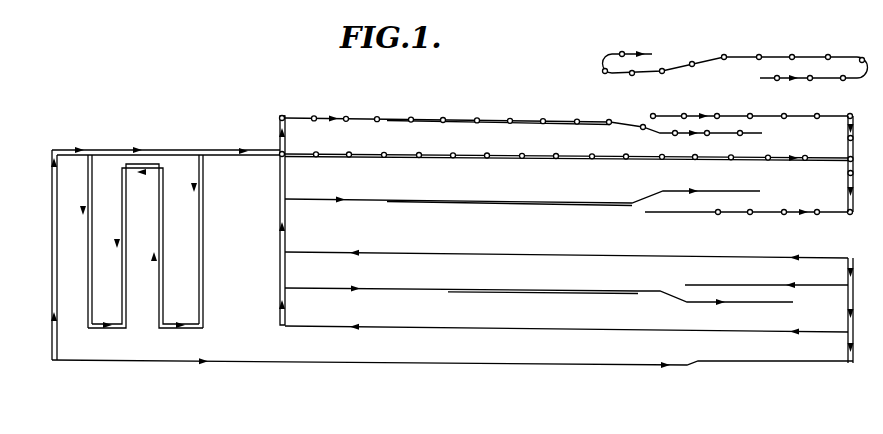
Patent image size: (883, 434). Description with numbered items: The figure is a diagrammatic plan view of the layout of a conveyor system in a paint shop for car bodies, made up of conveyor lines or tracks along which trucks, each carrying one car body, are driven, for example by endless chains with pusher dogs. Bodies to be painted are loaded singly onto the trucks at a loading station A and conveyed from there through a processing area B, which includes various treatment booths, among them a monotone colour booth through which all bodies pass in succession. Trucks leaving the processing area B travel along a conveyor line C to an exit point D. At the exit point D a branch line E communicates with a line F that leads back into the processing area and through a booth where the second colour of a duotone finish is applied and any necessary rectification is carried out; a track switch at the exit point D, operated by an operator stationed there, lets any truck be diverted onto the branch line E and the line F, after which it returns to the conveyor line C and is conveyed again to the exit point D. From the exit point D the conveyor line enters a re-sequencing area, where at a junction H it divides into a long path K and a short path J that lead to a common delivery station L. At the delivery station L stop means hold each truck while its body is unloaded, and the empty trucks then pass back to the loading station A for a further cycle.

The loading station A is at (55, 180).
The processing area B is at (591, 286).
The conveyor line C is at (533, 160).
The exit point D is at (281, 155).
The branch line E is at (288, 134).
The line F is at (523, 118).
The junction H is at (200, 152).
The short path J is at (112, 152).
The long path K is at (80, 269).
The delivery station L is at (61, 146).